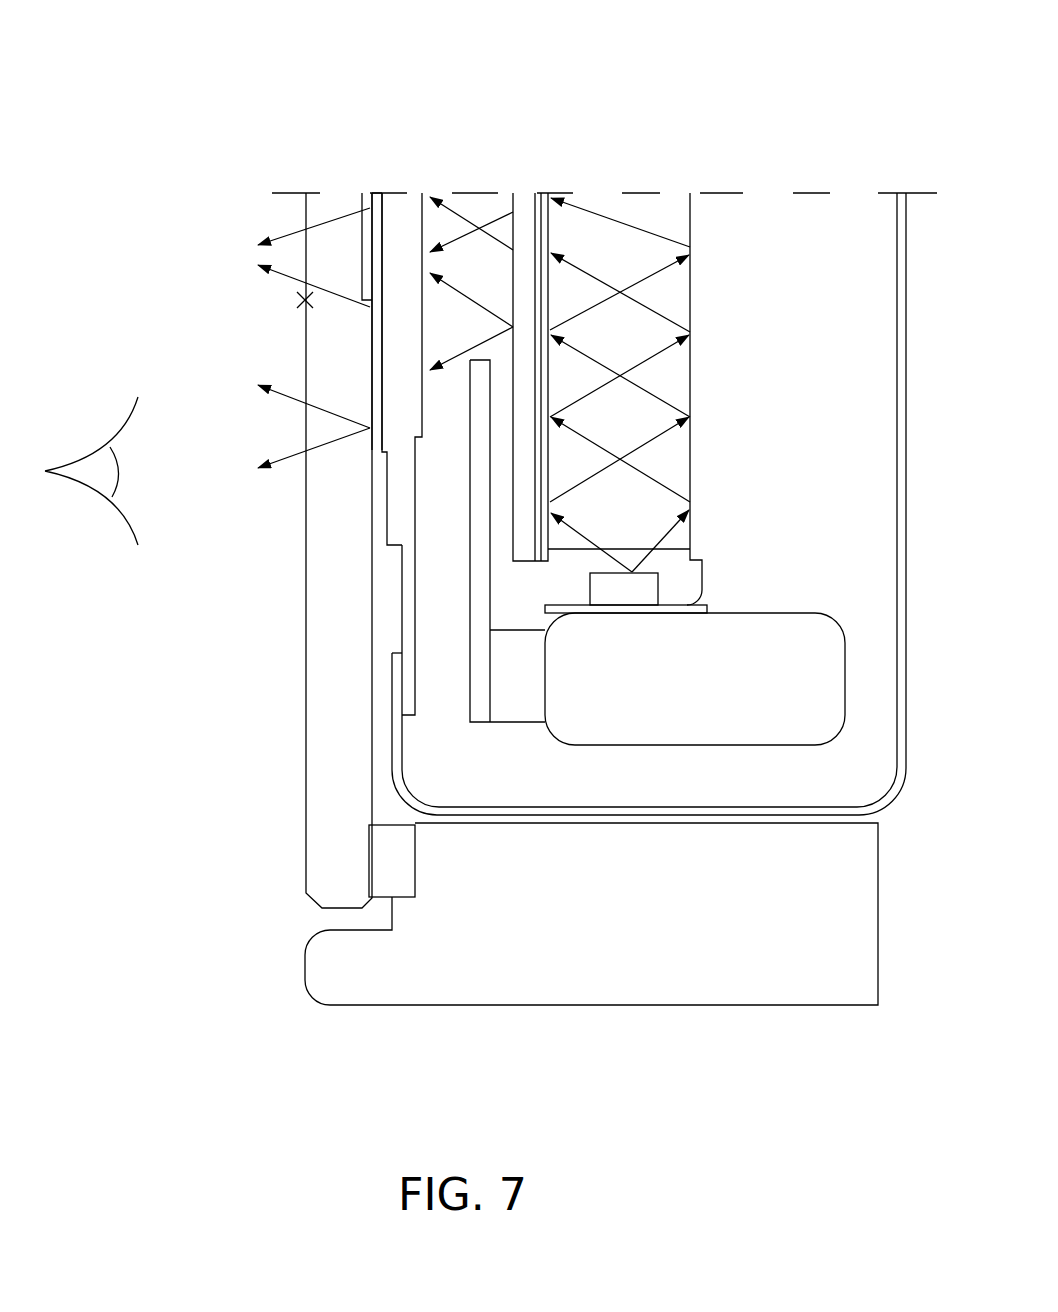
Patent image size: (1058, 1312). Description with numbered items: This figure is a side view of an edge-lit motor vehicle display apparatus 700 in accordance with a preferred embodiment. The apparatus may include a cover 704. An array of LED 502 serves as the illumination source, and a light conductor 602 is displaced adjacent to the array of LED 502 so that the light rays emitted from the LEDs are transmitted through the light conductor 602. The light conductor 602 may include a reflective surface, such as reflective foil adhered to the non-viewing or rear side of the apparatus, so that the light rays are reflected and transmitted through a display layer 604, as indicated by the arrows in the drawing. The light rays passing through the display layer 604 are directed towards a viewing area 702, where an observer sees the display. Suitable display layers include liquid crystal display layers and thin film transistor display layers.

The edge-lit motor vehicle display apparatus 700 is at (248, 118).
The display layer 604 is at (383, 210).
The light conductor 602 is at (598, 193).
The array of LED 502 is at (613, 588).
The viewing area 702 is at (108, 585).
The cover 704 is at (333, 797).